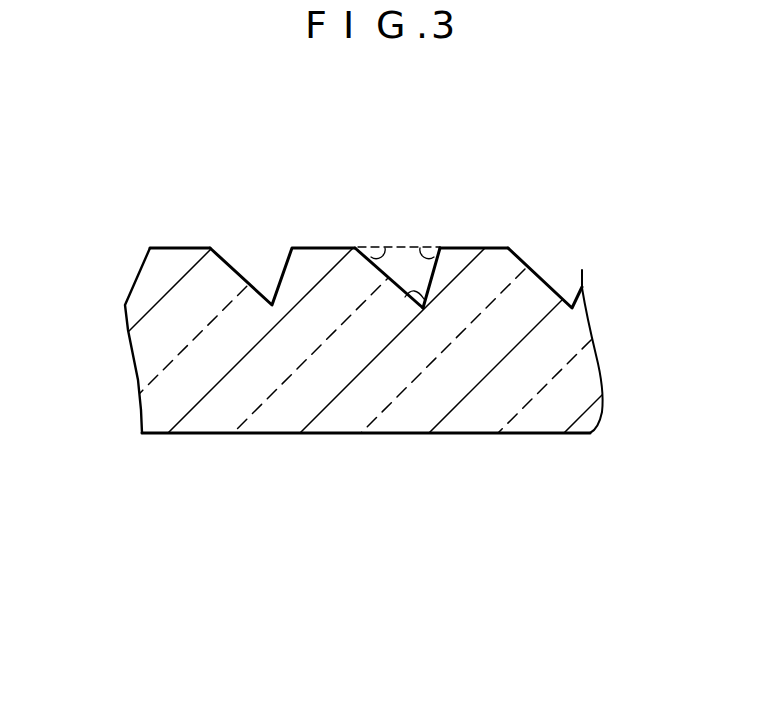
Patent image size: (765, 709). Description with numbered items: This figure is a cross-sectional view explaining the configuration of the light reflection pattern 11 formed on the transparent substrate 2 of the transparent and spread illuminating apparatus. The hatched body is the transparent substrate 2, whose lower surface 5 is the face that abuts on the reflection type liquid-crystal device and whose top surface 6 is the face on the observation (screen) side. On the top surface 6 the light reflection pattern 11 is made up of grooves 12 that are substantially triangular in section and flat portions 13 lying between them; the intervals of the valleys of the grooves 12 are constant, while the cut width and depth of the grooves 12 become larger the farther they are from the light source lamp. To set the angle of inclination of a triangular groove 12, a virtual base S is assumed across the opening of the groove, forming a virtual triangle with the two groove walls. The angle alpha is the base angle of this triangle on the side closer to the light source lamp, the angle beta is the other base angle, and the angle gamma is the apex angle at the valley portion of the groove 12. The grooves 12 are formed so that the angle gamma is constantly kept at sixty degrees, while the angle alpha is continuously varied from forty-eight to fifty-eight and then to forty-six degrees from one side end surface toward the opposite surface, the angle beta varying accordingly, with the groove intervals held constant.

The transparent substrate 2 is at (129, 354).
The lower surface 5 is at (260, 434).
The top surface 6 is at (509, 248).
The light reflection pattern 11 is at (181, 238).
The grooves 12 is at (234, 257).
The flat portions 13 is at (477, 246).
The virtual base S is at (402, 246).
The angle α alpha is at (388, 245).
The angle β beta is at (425, 246).
The angle γ gamma is at (406, 296).